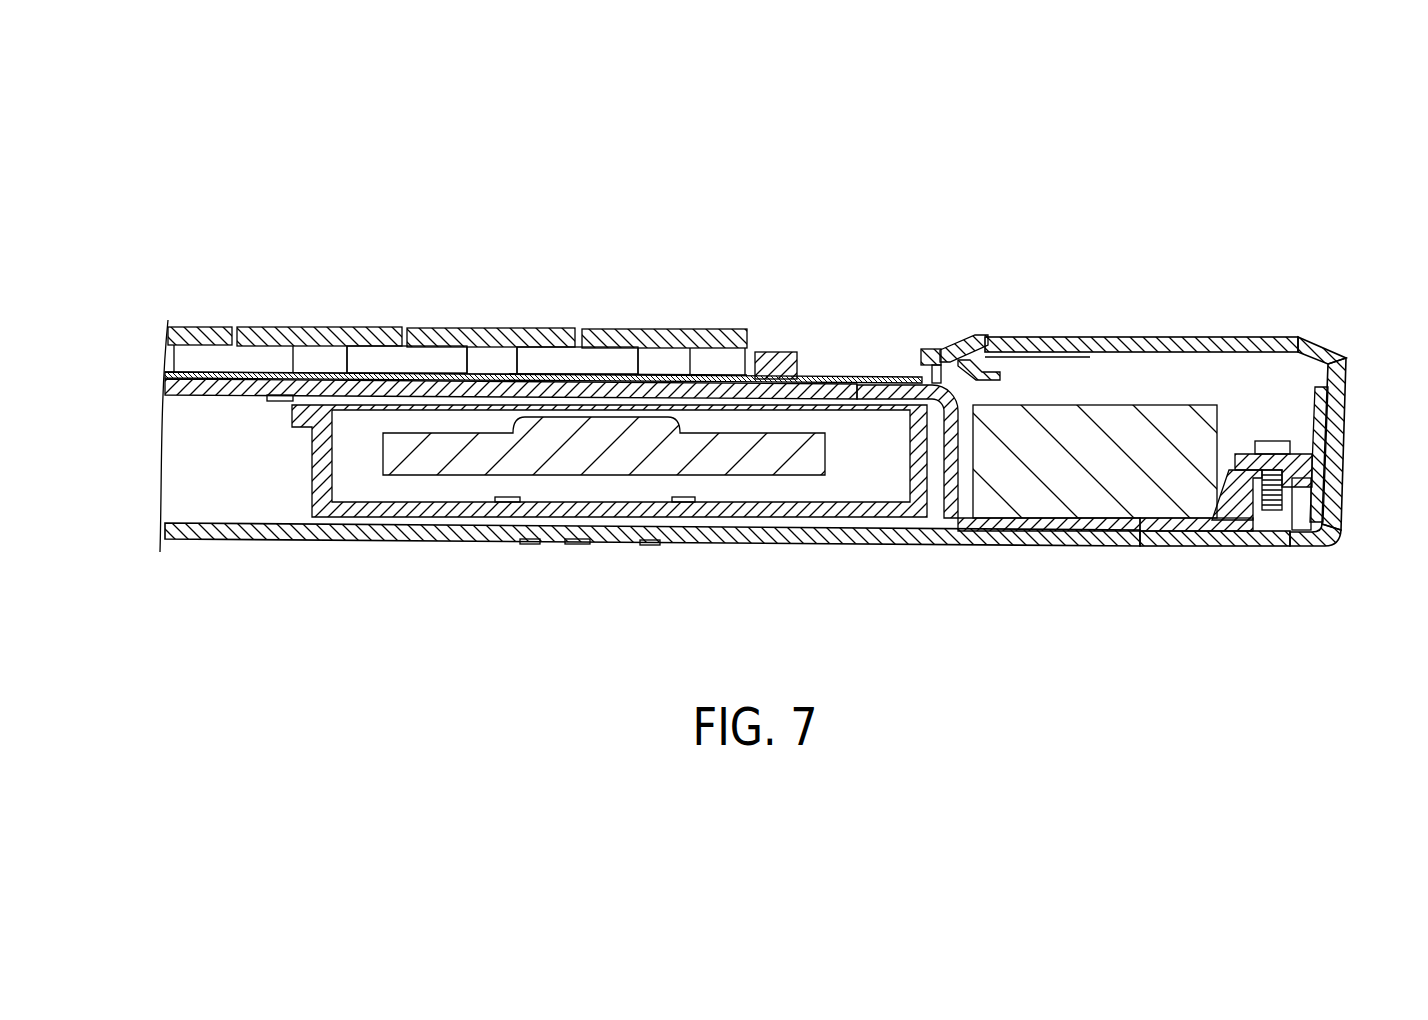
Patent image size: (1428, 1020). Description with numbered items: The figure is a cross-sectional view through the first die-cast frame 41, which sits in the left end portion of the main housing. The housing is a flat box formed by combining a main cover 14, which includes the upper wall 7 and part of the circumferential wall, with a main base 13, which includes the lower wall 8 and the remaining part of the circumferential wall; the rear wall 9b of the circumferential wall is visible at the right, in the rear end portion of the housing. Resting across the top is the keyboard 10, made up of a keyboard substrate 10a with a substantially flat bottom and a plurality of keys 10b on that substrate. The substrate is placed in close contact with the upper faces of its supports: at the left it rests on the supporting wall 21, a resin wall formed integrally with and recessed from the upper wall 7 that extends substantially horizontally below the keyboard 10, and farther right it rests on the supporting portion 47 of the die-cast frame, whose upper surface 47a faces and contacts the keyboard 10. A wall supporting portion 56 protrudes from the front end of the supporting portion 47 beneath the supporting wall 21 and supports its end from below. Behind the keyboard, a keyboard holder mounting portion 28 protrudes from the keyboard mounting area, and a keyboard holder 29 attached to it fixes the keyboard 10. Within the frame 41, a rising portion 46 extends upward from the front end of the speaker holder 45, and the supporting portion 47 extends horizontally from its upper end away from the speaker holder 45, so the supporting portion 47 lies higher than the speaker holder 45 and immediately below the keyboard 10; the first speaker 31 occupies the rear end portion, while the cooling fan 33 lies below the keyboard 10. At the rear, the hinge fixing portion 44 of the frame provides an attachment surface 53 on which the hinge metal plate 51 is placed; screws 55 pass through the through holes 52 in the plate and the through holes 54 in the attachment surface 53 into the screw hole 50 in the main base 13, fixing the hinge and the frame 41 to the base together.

The upper wall 7 is at (1148, 348).
The lower wall 8 is at (850, 547).
The rear wall 9b is at (1348, 440).
The keyboard 10 is at (565, 330).
The keyboard substrate 10a is at (325, 333).
The keys 10b is at (255, 330).
The main base 13 is at (1224, 548).
The main cover 14 is at (1305, 342).
The supporting wall 21 is at (192, 387).
The keyboard holder mounting portion 28 is at (926, 348).
The keyboard holder 29 is at (953, 345).
The first speaker 31 is at (1103, 519).
The cooling fan 33 is at (568, 462).
The first die-cast frame 41 is at (712, 381).
The hinge fixing portion 44 is at (1318, 537).
The speaker holder 45 is at (1170, 543).
The rising portion 46 is at (946, 482).
The supporting portion 47 is at (500, 340).
The surface of the supporting portion 47a is at (400, 340).
The screw hole 50 is at (1277, 512).
The hinge metal plate 51 is at (1250, 454).
The through holes 52 is at (1327, 470).
The attachment surface 53 is at (1238, 462).
The through holes 54 is at (1310, 483).
The screws 55 is at (1270, 441).
The wall supporting portion 56 is at (284, 402).